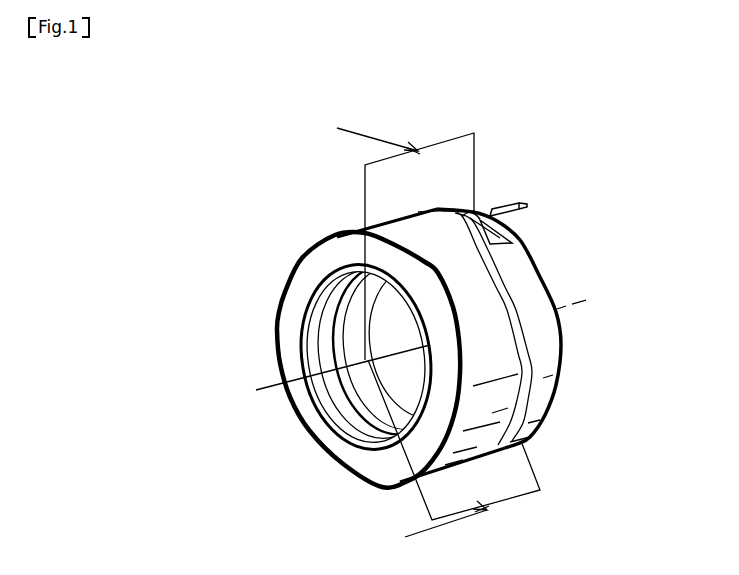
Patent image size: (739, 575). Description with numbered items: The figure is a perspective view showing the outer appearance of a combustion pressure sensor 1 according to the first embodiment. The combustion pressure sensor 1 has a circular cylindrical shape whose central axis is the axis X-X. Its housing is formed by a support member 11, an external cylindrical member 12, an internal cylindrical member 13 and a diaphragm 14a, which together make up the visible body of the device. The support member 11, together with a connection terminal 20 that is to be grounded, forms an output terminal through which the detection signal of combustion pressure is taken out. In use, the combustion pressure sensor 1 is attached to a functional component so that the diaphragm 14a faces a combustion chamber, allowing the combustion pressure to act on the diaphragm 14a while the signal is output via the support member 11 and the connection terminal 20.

The combustion pressure sensor 1 is at (240, 203).
The support member 11 is at (543, 352).
The external cylindrical member 12 is at (505, 405).
The internal cylindrical member 13 is at (300, 368).
The diaphragm 14a is at (330, 443).
The connection terminal 20 is at (505, 210).